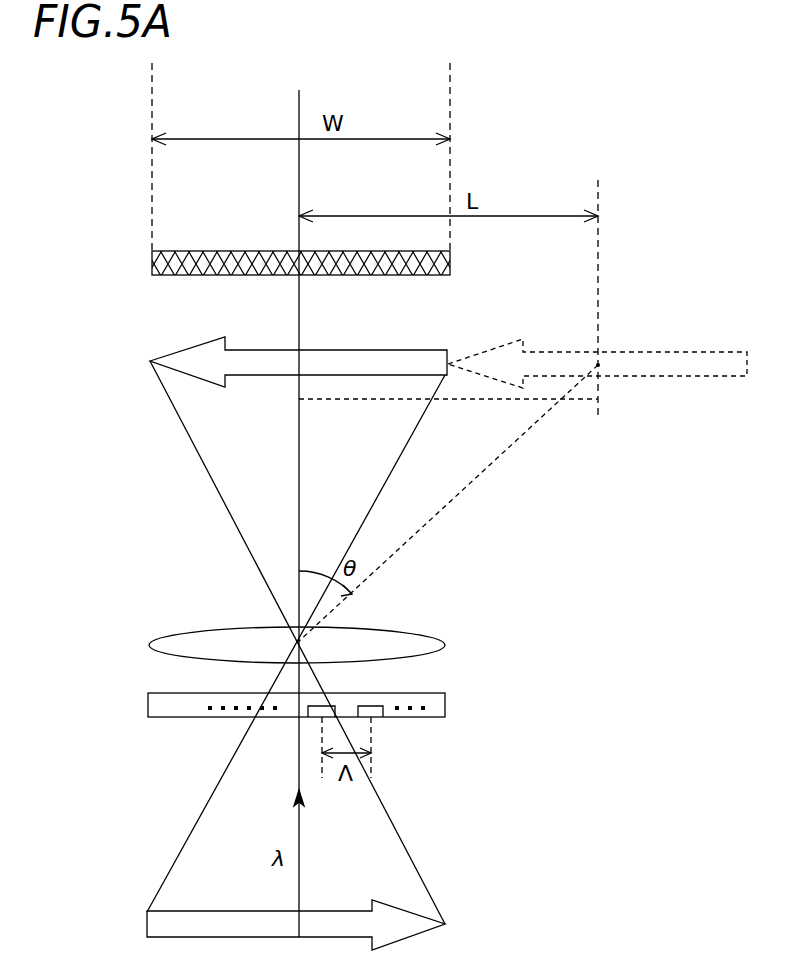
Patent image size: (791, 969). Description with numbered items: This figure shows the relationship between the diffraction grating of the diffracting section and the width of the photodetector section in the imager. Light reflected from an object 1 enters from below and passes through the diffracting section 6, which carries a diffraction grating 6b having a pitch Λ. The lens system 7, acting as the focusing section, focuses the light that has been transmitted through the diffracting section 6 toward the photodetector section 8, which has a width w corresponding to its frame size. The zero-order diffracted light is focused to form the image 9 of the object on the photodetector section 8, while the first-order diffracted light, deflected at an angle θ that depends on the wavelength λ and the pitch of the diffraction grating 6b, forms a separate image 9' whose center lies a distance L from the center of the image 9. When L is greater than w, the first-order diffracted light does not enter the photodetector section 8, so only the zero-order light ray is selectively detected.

The object 1 is at (258, 912).
The diffracting section 6 is at (438, 692).
The diffraction grating 6b is at (384, 719).
The lens system 7 is at (395, 628).
The photodetector section 8 is at (203, 252).
The image formed by zero-order diffracted light 9 is at (276, 340).
The image formed by first-order diffracted light 9' is at (597, 332).